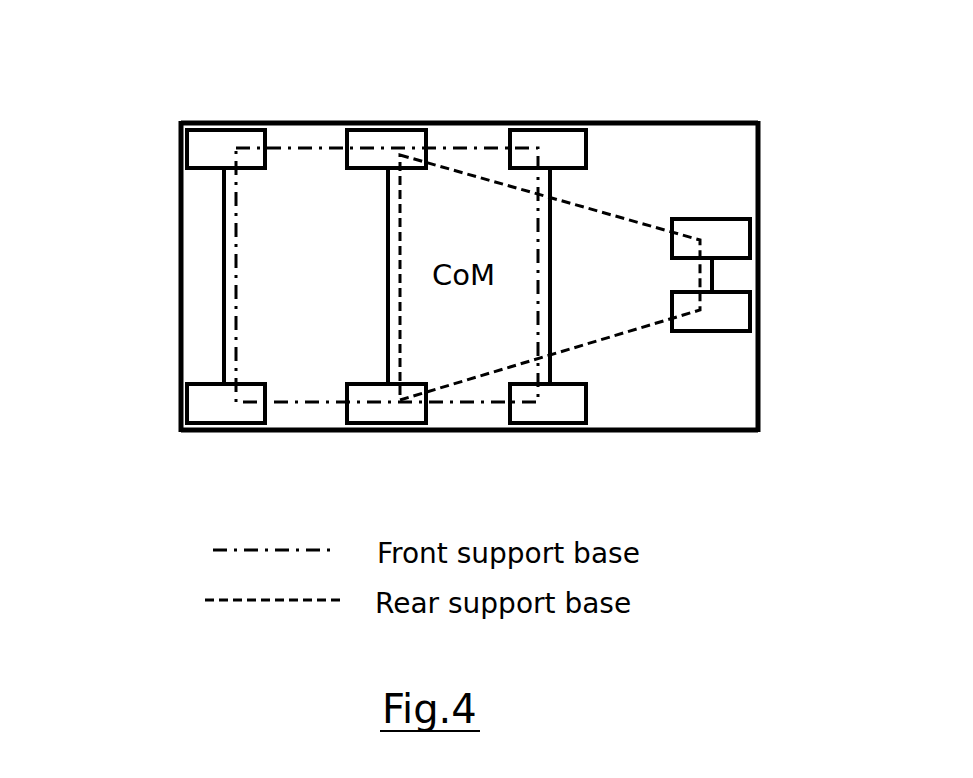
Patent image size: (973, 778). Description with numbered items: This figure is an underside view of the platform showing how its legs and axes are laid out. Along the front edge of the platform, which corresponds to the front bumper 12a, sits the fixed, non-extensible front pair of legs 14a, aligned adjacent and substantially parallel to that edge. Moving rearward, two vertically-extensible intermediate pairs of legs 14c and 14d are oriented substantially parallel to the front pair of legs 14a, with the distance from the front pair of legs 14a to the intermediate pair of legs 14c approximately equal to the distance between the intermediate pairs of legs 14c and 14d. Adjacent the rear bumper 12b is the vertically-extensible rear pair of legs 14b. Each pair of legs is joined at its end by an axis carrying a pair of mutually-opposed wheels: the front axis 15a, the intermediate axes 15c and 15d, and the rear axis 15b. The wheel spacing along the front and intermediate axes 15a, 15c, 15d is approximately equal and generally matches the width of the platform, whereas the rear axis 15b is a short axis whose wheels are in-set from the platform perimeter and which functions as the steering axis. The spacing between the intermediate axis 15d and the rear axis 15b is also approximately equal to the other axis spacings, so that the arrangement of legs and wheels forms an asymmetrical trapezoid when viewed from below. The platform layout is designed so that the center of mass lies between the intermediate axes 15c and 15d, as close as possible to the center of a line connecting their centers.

The front bumper 12a is at (174, 276).
The rear bumper 12b is at (764, 277).
The front pair of legs 14a is at (205, 148).
The rear pair of legs 14b is at (730, 228).
The intermediate pair of legs 14c is at (352, 132).
The intermediate pair of legs 14d is at (535, 140).
The front axis 15a is at (220, 228).
The rear axis 15b is at (718, 272).
The intermediate axis 15c is at (384, 278).
The intermediate axis 15d is at (555, 297).